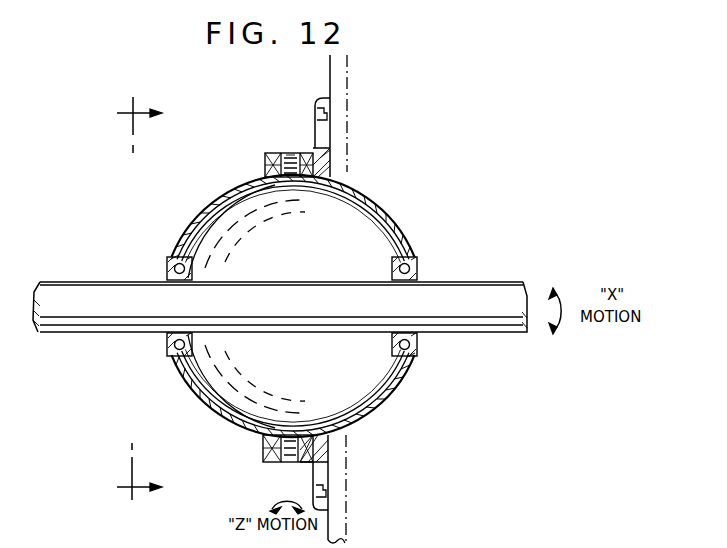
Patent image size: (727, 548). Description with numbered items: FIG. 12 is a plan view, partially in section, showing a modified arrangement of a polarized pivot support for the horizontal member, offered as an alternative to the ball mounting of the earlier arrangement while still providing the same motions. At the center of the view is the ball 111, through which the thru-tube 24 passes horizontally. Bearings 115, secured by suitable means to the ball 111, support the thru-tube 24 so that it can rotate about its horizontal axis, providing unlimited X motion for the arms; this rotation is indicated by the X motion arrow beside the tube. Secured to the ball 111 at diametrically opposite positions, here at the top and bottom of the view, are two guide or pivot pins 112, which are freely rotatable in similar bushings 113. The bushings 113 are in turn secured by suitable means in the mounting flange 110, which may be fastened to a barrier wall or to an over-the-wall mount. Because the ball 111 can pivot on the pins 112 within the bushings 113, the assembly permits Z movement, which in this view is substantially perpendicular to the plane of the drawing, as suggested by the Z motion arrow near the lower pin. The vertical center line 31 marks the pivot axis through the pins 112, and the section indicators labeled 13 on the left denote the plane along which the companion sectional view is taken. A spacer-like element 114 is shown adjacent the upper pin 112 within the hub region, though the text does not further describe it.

The ball 111 is at (390, 212).
The thru-tube 24 is at (473, 313).
The bearings 115 is at (166, 272).
The bushings 113 is at (265, 160).
The guide pins 112 is at (289, 160).
The spacer 114 is at (295, 153).
The mounting flange 110 is at (317, 128).
The center line axis 31 is at (348, 88).
The section line for FIG. 13 is at (125, 299).